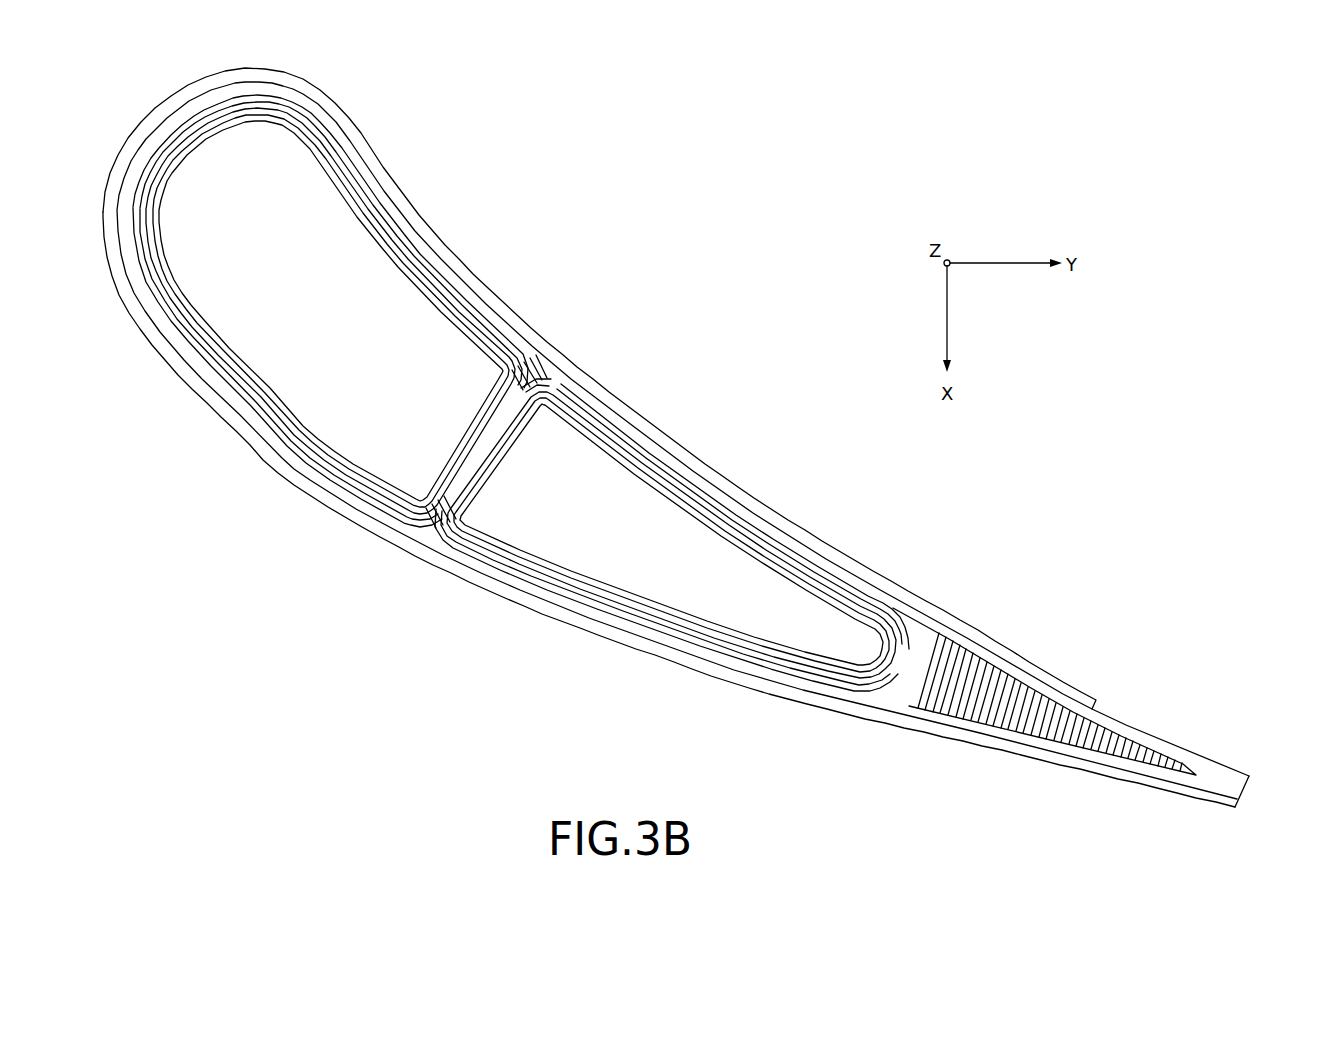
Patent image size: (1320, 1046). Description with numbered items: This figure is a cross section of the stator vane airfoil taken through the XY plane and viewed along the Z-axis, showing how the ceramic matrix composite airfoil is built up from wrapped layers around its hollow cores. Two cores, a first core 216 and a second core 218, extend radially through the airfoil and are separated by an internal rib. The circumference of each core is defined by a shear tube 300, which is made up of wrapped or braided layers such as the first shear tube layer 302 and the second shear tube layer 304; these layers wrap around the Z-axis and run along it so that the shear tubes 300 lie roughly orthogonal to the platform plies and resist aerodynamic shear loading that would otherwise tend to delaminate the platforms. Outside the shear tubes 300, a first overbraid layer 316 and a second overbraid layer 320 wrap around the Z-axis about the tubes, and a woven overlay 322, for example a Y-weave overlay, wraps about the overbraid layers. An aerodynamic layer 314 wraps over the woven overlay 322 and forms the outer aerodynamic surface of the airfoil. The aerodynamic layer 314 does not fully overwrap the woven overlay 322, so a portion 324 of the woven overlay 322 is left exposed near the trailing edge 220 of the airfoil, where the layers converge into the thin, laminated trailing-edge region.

The trailing edge 220 is at (1235, 740).
The first core 216 is at (324, 325).
The second core 218 is at (651, 557).
The shear tube 300 is at (279, 395).
The first shear tube layer 302 is at (145, 194).
The second shear tube layer 304 is at (145, 247).
The aerodynamic layer 314 is at (553, 347).
The first overbraid layer 316 is at (367, 187).
The second overbraid layer 320 is at (372, 228).
The woven overlay 322 is at (375, 175).
The exposed portion of the woven overlay 324 is at (1160, 742).